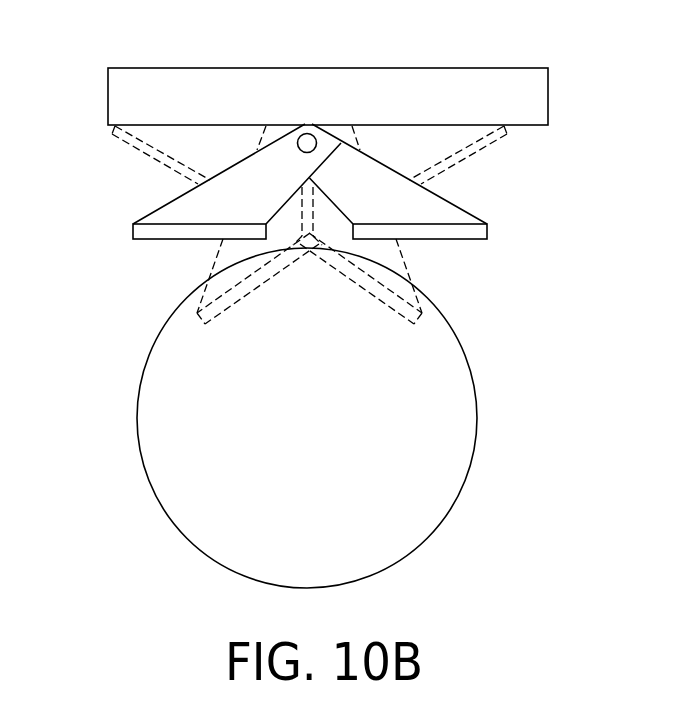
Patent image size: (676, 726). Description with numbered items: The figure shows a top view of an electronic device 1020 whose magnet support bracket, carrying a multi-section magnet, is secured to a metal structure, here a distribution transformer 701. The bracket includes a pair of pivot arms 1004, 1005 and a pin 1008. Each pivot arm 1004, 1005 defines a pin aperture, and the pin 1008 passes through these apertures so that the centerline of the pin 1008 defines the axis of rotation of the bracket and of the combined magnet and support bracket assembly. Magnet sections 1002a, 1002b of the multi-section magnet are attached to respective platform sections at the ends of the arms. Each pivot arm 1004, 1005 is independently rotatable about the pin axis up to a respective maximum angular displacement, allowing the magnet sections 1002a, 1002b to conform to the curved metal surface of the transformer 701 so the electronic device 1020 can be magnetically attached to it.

The electronic device 1020 is at (308, 68).
The pin 1008 is at (316, 135).
The pivot arm 1004 is at (166, 205).
The pivot arm 1005 is at (440, 200).
The magnet section 1002a is at (165, 240).
The magnet section 1002b is at (488, 230).
The distribution transformer 701 is at (477, 420).